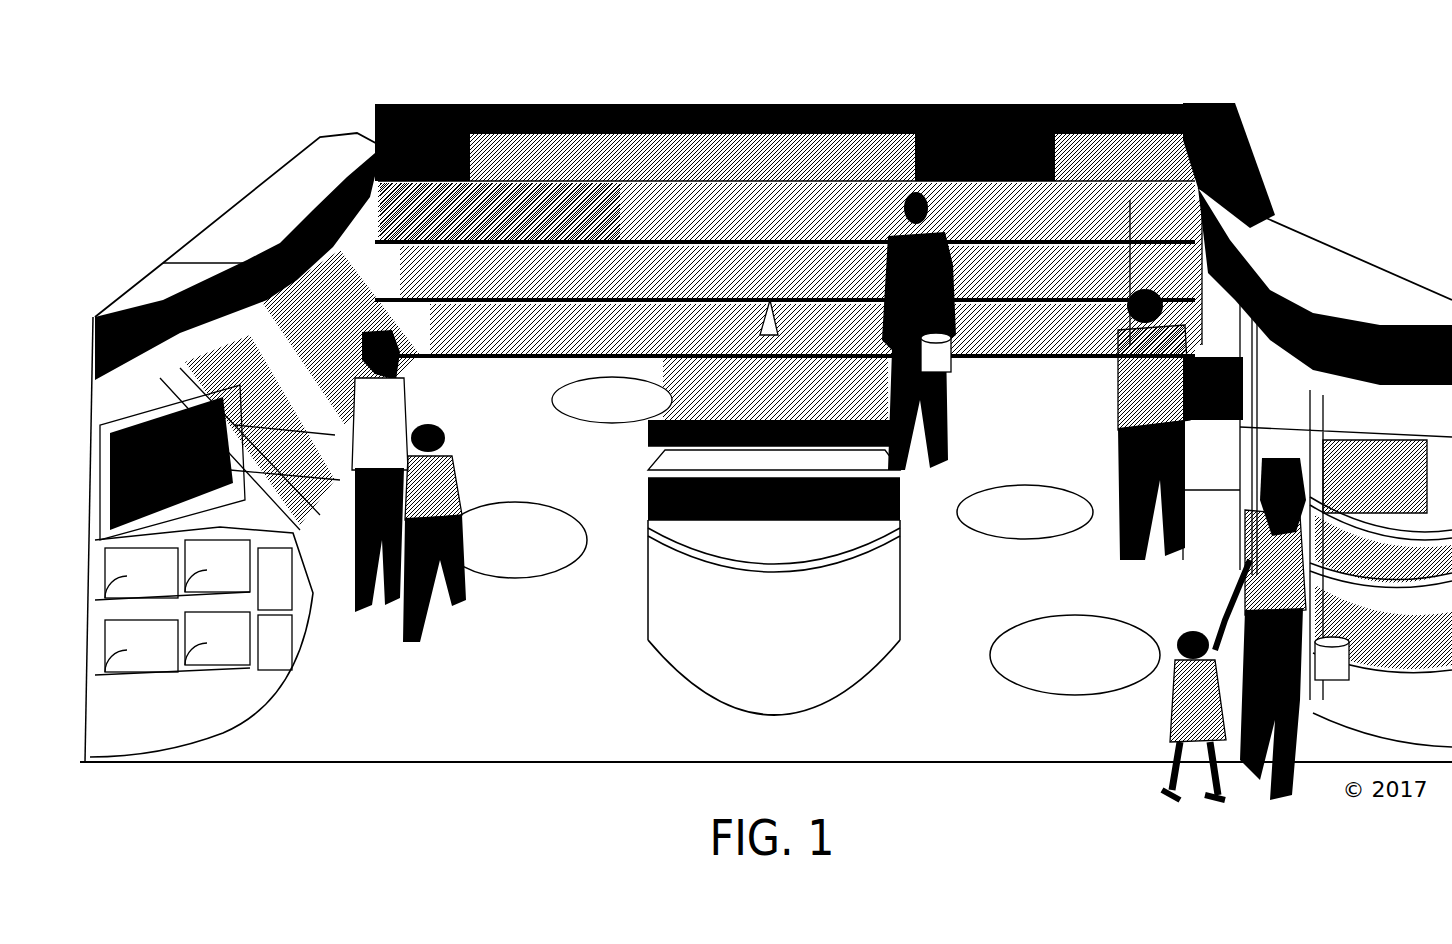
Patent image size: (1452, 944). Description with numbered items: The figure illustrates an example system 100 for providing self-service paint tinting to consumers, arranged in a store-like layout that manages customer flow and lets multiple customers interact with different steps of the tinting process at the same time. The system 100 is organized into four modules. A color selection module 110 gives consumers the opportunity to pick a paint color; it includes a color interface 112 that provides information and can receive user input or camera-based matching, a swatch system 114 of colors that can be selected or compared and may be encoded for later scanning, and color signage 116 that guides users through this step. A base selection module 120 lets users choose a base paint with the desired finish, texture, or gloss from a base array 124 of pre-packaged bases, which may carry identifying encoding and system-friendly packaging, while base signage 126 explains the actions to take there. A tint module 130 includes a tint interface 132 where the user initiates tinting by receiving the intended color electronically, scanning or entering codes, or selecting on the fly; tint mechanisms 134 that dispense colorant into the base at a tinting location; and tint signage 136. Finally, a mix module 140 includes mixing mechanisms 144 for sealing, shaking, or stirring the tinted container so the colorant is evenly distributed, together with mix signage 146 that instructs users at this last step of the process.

The system 100 is at (183, 108).
The color selection module 110 is at (766, 539).
The color interface 112 is at (201, 571).
The swatch system 114 is at (257, 331).
The color signage 116 is at (489, 486).
The base selection module 120 is at (785, 240).
The base array 124 is at (786, 268).
The base signage 126 is at (726, 507).
The tint module 130 is at (962, 331).
The tint interface 132 is at (1187, 277).
The tint mechanisms 134 is at (1187, 427).
The tint signage 136 is at (1021, 524).
The mix module 140 is at (1076, 631).
The mixing mechanisms 144 is at (1317, 451).
The mix signage 146 is at (1115, 715).